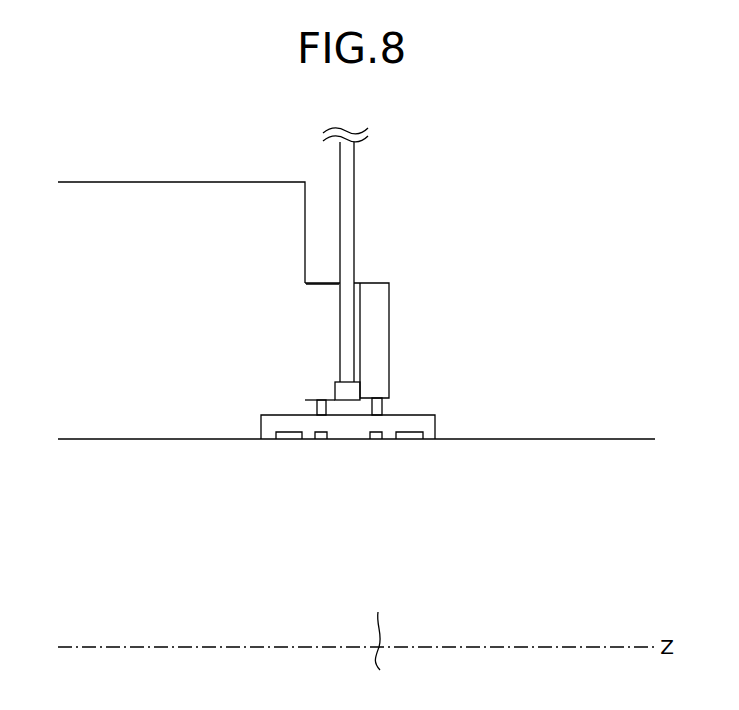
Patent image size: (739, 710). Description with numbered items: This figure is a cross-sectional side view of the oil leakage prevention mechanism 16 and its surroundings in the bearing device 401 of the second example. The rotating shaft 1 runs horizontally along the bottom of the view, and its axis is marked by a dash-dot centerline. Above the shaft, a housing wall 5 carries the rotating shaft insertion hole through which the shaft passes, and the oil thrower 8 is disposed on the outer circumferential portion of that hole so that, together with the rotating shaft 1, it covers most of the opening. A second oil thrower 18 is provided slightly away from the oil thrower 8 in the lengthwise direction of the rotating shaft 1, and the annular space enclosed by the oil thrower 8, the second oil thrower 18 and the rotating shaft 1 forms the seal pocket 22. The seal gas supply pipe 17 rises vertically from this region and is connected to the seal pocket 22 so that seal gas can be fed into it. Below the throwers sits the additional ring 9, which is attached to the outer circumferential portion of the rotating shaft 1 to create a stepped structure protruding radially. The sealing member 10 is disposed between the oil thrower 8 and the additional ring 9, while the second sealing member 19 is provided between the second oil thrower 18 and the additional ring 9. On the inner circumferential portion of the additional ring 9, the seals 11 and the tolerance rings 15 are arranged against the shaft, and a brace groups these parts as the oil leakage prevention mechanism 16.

The housing wall 5 is at (305, 197).
The seal gas supply pipe 17 is at (355, 208).
The second oil thrower 18 is at (390, 298).
The oil thrower 8 is at (318, 285).
The sealing member 10 is at (328, 408).
The second sealing member 19 is at (383, 410).
The additional ring 9 is at (422, 412).
The tolerance rings 15 is at (290, 440).
The seals 11 is at (321, 440).
The seal pocket 22 is at (353, 408).
The oil leakage prevention mechanism 16 is at (473, 248).
The bearing device 401 is at (541, 178).
The rotating shaft 1 is at (357, 655).